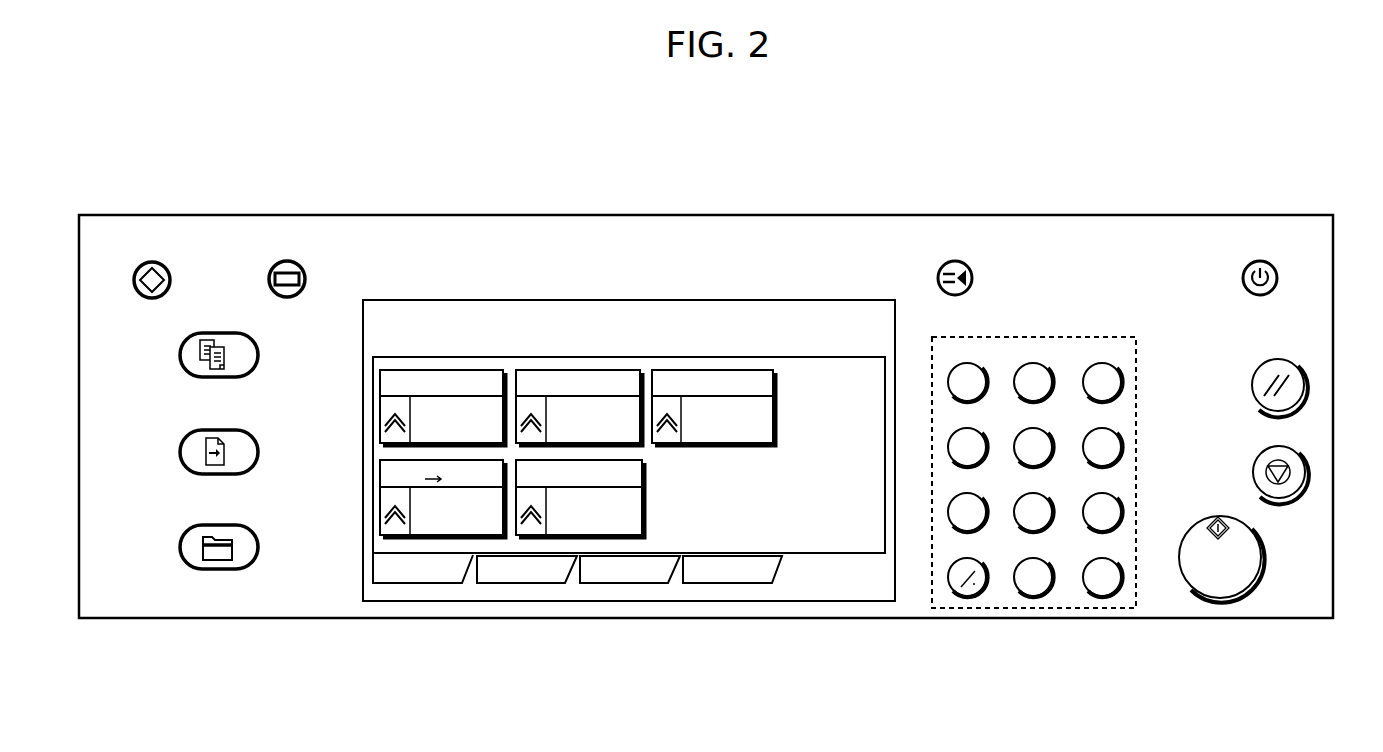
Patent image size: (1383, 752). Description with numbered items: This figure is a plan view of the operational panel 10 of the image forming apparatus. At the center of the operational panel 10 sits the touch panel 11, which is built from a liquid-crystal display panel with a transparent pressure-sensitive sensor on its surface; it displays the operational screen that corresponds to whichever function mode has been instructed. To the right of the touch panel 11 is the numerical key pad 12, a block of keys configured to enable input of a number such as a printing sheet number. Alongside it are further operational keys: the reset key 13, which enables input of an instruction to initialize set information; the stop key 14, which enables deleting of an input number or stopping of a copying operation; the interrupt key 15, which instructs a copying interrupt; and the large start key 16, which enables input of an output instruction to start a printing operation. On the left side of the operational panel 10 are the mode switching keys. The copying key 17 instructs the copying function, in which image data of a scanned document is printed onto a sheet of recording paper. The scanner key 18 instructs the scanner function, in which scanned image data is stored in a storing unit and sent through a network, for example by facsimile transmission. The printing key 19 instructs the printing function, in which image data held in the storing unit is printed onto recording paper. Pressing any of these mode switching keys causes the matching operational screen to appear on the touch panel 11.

The operation panel 10 is at (696, 186).
The touch panel 11 is at (710, 300).
The numerical key pad 12 is at (1113, 337).
The reset key 13 is at (1300, 367).
The stop key 14 is at (1300, 455).
The interrupt key 15 is at (970, 271).
The start key 16 is at (1262, 548).
The copying key 17 is at (259, 355).
The scanner key 18 is at (259, 452).
The printing key 19 is at (259, 547).